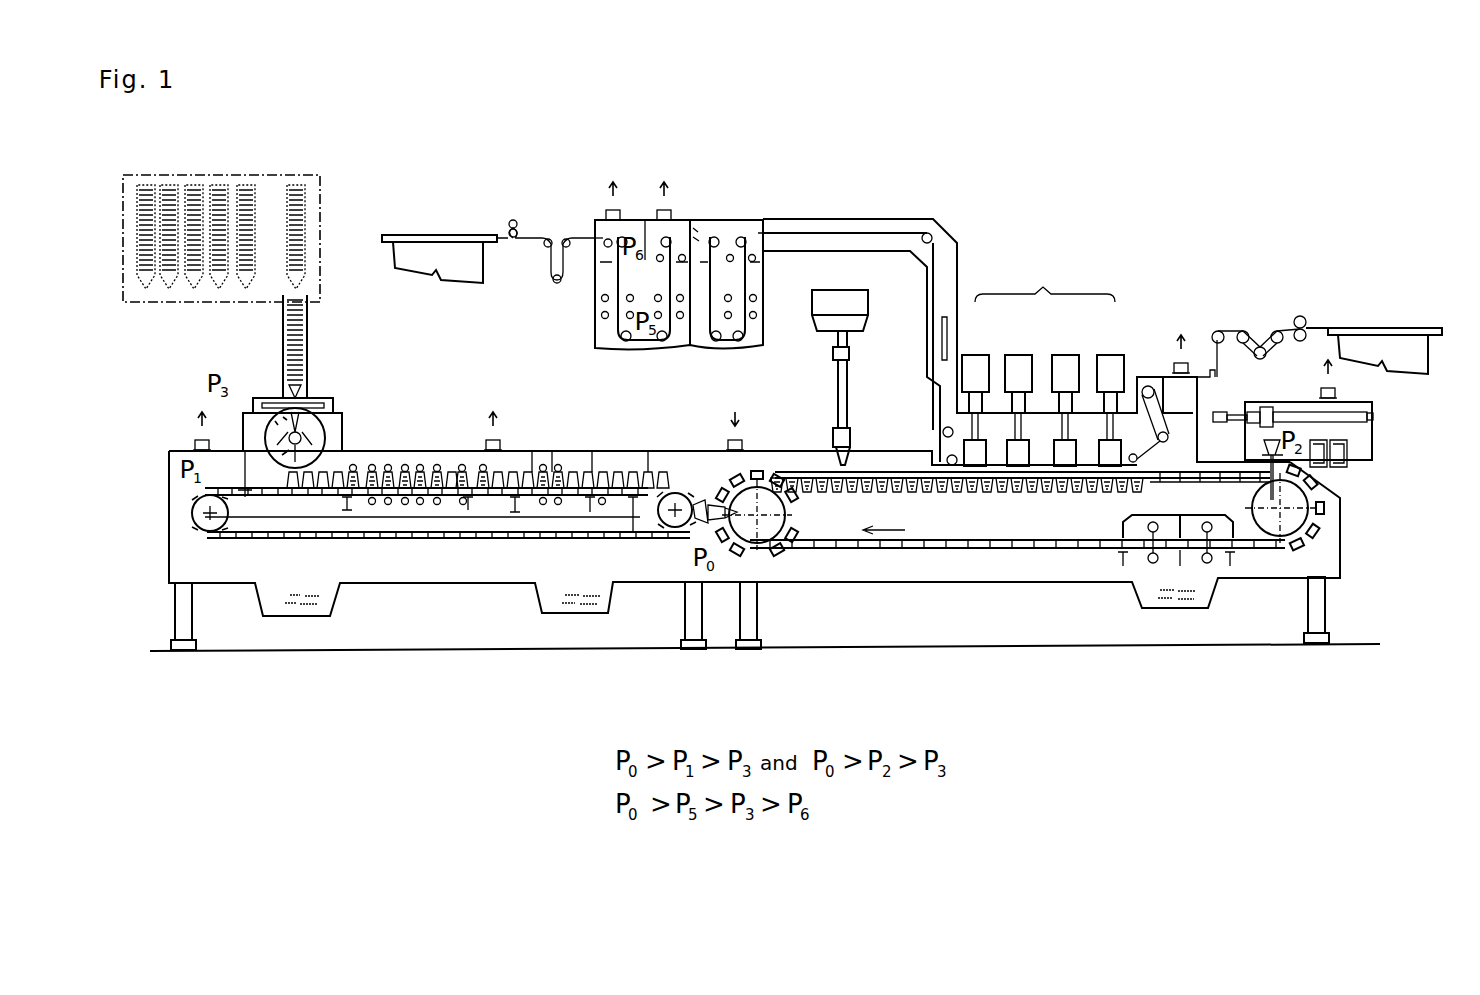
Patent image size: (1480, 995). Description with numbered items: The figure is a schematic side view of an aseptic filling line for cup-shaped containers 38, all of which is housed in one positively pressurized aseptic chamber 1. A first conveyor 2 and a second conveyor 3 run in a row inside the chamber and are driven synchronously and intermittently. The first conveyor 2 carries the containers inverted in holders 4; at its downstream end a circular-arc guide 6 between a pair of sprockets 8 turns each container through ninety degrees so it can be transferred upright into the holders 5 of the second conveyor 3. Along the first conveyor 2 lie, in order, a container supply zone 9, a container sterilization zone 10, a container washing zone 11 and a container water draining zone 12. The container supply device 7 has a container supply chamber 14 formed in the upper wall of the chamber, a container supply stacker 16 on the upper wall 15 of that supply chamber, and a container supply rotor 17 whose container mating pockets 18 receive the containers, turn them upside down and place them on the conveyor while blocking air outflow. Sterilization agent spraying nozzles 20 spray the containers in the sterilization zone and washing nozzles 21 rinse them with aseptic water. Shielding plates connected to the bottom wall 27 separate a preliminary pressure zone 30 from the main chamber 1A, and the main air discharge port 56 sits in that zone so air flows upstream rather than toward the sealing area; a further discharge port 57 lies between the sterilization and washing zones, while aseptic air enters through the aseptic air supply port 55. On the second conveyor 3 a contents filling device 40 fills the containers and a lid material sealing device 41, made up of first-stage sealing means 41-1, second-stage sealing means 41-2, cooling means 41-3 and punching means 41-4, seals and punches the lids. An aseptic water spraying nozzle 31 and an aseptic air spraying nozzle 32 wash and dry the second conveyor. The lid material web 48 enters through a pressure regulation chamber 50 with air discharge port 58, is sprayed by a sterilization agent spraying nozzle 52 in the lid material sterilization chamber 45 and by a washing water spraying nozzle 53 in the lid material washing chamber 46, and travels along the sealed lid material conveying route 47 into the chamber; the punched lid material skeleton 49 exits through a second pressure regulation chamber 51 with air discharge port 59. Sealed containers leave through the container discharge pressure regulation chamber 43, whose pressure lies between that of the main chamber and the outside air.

The aseptic chamber 1 is at (818, 572).
The main chamber of the aseptic chamber 1A is at (625, 559).
The first conveyor 2 is at (470, 546).
The second conveyor 3 is at (1002, 556).
The holders 4 is at (410, 540).
The holders 5 is at (927, 552).
The guide 6 is at (685, 470).
The container supply device 7 is at (270, 408).
The sprockets 8 is at (668, 525).
The container supply zone 9 is at (263, 480).
The container sterilization zone 10 is at (415, 455).
The container washing zone 11 is at (533, 455).
The container water draining zone 12 is at (610, 455).
The container supply chamber 14 is at (345, 436).
The upper wall of the container supply chamber 15 is at (335, 412).
The container supply stacker 16 is at (283, 338).
The container supply rotor 17 is at (267, 431).
The container mating pockets 18 is at (302, 409).
The sterilization agent spraying nozzles 20 is at (387, 505).
The washing nozzles 21 is at (557, 502).
The bottom wall 27 is at (507, 583).
The preliminary pressure zone 30 is at (180, 566).
The aseptic water spraying nozzle 31 is at (1210, 565).
The aseptic air spraying nozzle 32 is at (1149, 565).
The cup-shaped containers 38 is at (460, 465).
The contents filling device 40 is at (846, 288).
The lid material sealing device 41 is at (1045, 364).
The first-stage sealing means 41-1 is at (975, 355).
The second-stage sealing means 41-2 is at (1018, 355).
The cooling means 41-3 is at (1065, 355).
The punching means 41-4 is at (1110, 355).
The container discharge pressure regulation chamber 43 is at (1375, 444).
The lid material sterilization chamber 45 is at (645, 288).
The lid material washing chamber 46 is at (724, 287).
The lid material conveying route 47 is at (950, 270).
The lid material web 48 is at (813, 233).
The lid material skeleton 49 is at (1305, 322).
The pressure regulation chamber 50 is at (607, 258).
The pressure regulation chamber 51 is at (1175, 388).
The sterilization agent spraying nozzle 52 is at (600, 312).
The washing water spraying nozzle 53 is at (755, 315).
The aseptic air supply port 55 is at (747, 443).
The main air discharge port 56 is at (195, 445).
The container sterilization-container washing zone discharge port 57 is at (497, 437).
The air discharge port 58 is at (607, 215).
The air discharge port 59 is at (1194, 367).